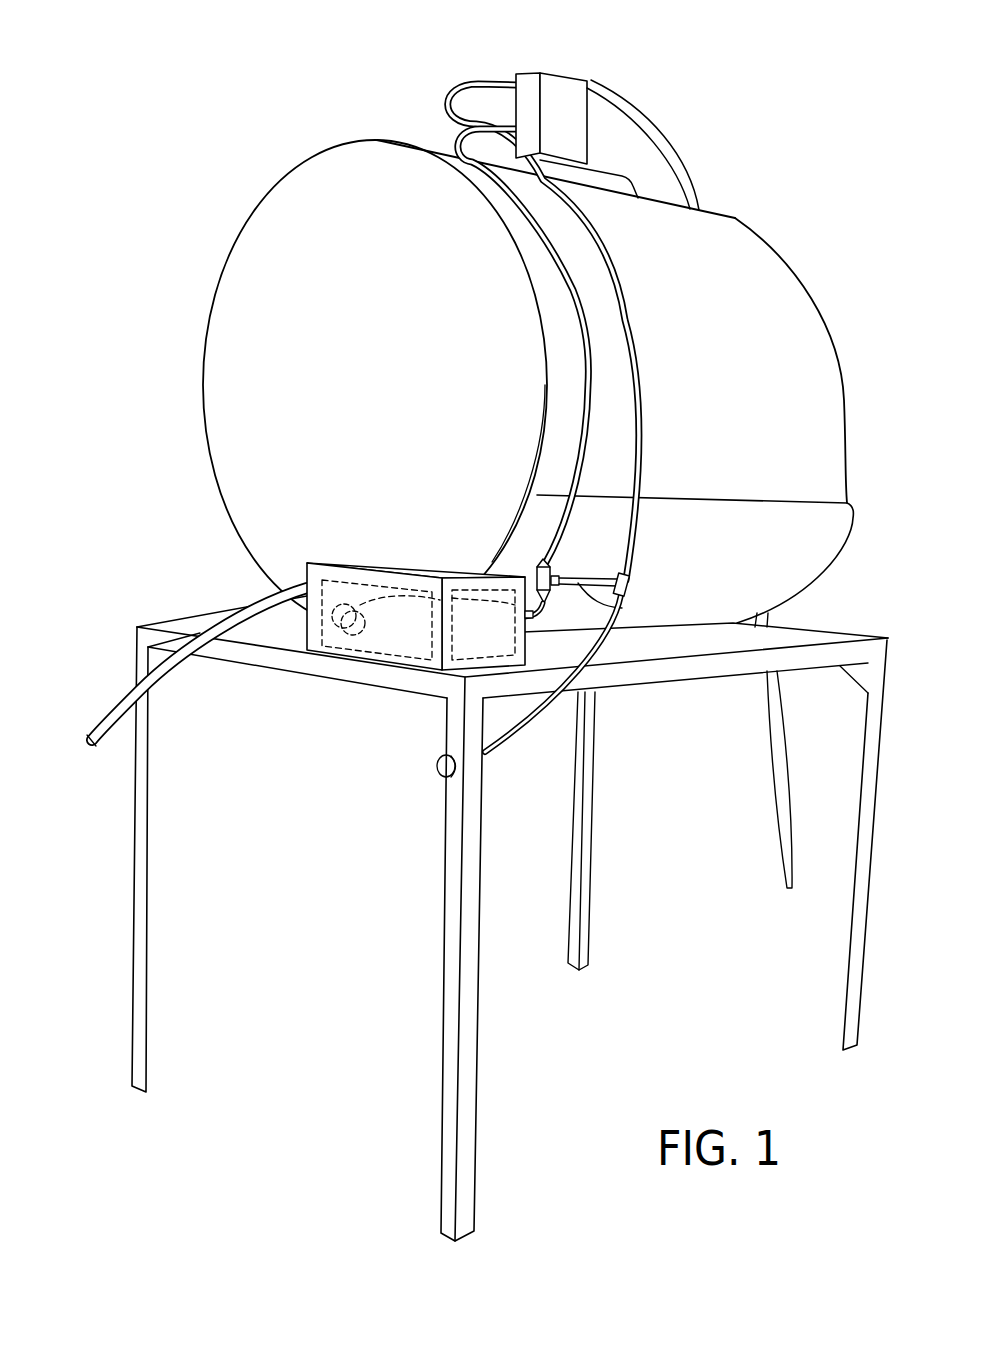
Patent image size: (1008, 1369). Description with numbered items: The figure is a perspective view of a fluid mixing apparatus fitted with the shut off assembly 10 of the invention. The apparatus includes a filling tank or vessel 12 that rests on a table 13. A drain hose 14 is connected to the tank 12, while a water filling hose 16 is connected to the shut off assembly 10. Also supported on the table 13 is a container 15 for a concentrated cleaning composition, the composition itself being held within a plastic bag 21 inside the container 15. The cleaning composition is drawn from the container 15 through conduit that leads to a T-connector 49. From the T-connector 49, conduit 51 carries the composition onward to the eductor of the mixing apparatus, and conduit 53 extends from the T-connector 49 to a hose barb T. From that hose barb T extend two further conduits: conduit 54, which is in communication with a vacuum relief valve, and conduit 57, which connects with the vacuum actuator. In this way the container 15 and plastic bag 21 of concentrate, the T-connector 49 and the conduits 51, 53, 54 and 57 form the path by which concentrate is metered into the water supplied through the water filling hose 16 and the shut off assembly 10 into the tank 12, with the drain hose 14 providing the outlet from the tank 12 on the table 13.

The shut off assembly 10 is at (588, 78).
The filling tank 12 is at (807, 297).
The table 13 is at (818, 632).
The drain hose 14 is at (123, 692).
The container 15 is at (400, 558).
The water filling hose 16 is at (652, 137).
The plastic bag 21 is at (370, 643).
The T-connector 49 is at (550, 568).
The conduit 51 is at (567, 291).
The conduit 53 is at (620, 606).
The conduit 54 is at (505, 743).
The conduit 57 is at (622, 284).